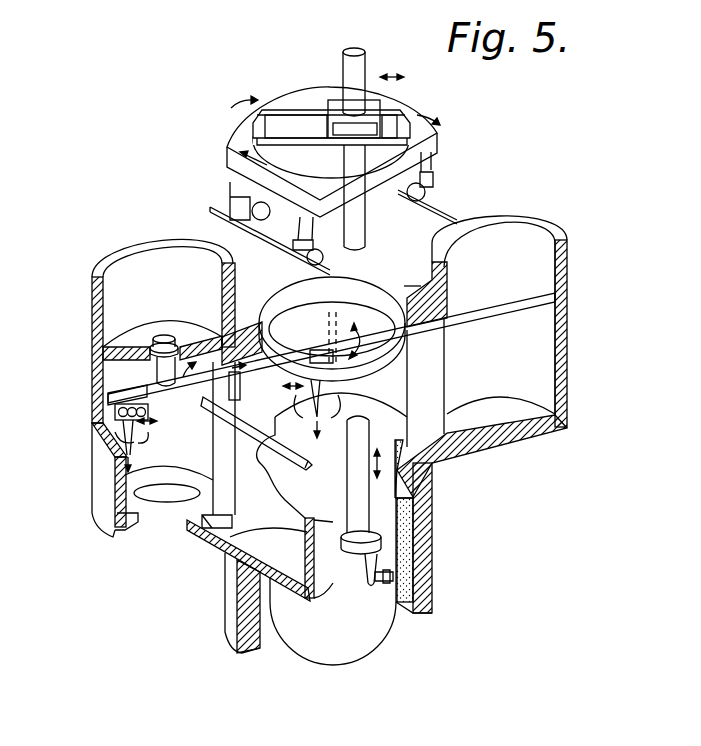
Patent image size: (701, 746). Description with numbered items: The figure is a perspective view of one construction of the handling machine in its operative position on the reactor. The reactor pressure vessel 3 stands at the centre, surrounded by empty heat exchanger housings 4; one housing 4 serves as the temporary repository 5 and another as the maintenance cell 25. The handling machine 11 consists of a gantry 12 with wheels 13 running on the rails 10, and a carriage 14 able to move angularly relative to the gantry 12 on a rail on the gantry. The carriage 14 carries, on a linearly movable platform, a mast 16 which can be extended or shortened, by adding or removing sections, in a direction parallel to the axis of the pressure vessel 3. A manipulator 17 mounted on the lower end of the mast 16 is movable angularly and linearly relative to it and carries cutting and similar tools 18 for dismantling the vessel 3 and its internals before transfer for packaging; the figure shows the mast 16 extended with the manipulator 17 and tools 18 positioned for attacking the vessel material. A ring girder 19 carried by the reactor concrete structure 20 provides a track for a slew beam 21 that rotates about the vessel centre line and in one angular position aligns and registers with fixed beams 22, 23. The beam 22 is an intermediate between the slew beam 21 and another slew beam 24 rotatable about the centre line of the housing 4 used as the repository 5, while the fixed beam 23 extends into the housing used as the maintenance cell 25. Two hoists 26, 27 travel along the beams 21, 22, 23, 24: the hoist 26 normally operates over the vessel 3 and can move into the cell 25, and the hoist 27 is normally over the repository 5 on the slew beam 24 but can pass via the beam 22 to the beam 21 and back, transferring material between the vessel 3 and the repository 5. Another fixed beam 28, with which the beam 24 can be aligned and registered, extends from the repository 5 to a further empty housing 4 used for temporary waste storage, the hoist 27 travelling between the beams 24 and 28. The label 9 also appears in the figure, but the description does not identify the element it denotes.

The reactor pressure vessel 3 is at (390, 632).
The heat exchanger housing 4 is at (132, 243).
The temporary repository 5 is at (148, 293).
The central housing 9 is at (425, 294).
The rails 10 is at (248, 222).
The handling machine 11 is at (453, 156).
The gantry 12 is at (244, 154).
The wheels 13 is at (235, 183).
The carriage 14 is at (307, 120).
The mast 16 is at (357, 63).
The manipulator 17 is at (373, 585).
The cutting tools 18 is at (398, 583).
The ring girder 19 is at (400, 358).
The reactor concrete structure 20 is at (250, 348).
The slew beam 21 is at (332, 329).
The fixed beam 22 is at (240, 393).
The fixed beam 23 is at (508, 310).
The slew beam 24 is at (147, 374).
The maintenance cell 25 is at (543, 356).
The hoist 26 is at (313, 412).
The hoist 27 is at (93, 407).
The fixed beam 28 is at (247, 440).